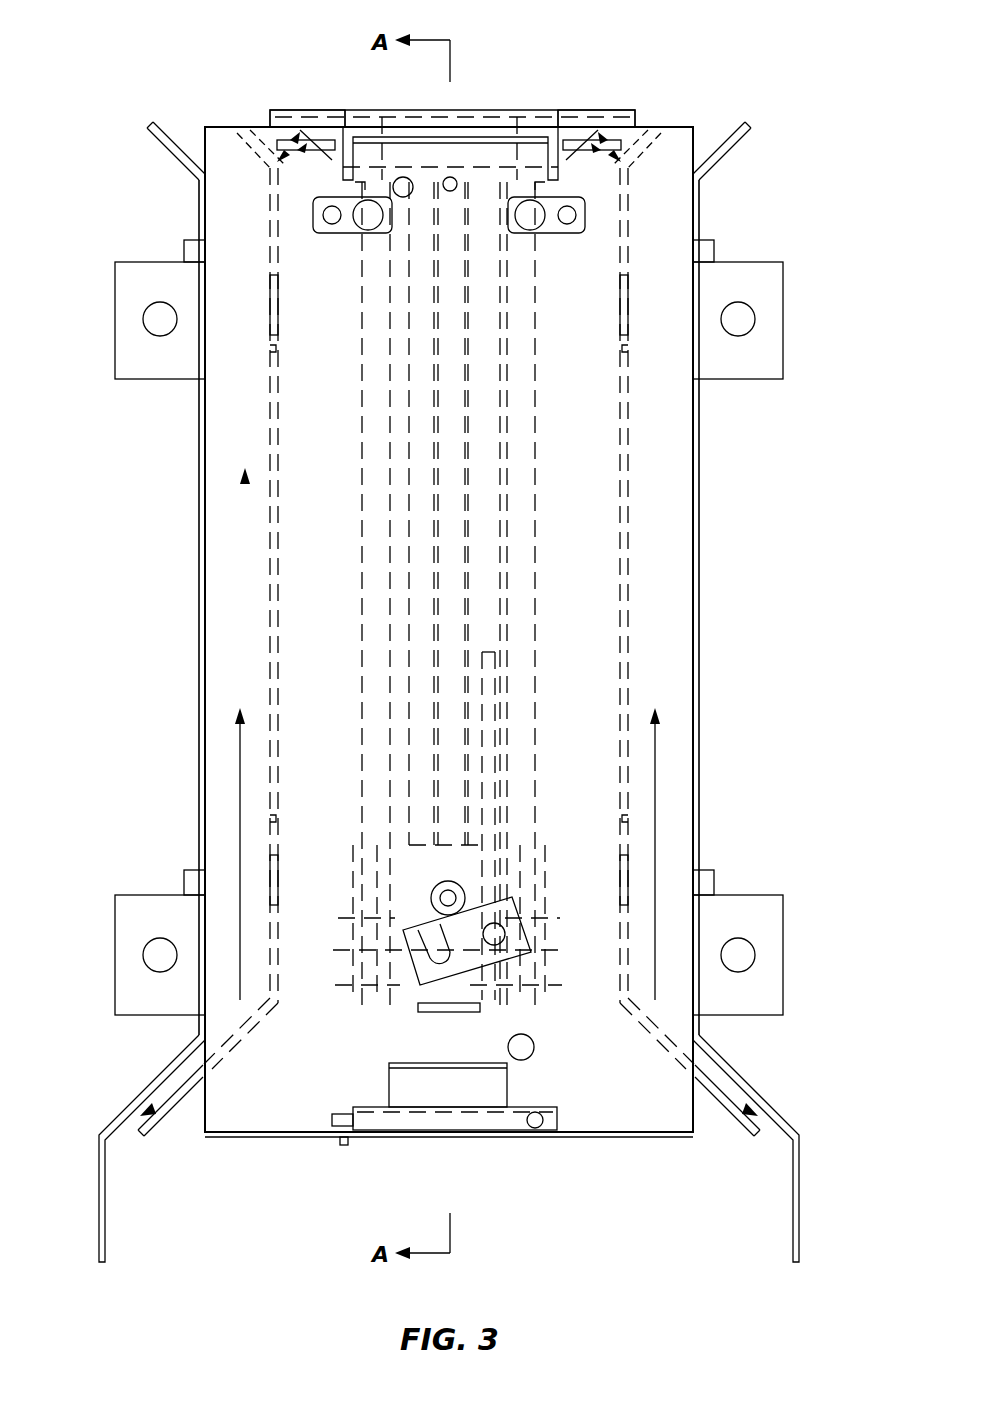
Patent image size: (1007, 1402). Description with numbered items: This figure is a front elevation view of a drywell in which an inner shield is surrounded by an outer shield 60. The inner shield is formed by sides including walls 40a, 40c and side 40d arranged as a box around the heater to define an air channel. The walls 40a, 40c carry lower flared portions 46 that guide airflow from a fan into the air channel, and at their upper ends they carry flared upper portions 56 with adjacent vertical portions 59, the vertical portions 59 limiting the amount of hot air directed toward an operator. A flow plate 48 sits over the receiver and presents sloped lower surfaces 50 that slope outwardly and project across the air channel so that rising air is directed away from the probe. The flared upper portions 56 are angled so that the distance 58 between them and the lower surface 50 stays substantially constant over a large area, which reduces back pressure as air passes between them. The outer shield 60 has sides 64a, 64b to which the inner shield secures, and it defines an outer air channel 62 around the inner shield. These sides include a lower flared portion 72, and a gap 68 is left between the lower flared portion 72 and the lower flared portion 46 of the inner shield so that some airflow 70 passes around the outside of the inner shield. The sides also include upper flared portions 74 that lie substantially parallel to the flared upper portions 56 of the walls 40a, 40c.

The side of inner shield 40a is at (302, 1075).
The side of inner shield 40c is at (270, 610).
The side of inner shield 40d is at (628, 605).
The flared portion 46 is at (167, 1118).
The flow plate 48 is at (490, 95).
The sloped lower surface 50 is at (262, 152).
The flared upper portion 56 is at (258, 128).
The distance 58 is at (285, 162).
The vertical portion 59 is at (278, 135).
The outer shield 60 is at (170, 450).
The outer air channel 62 is at (245, 470).
The side of outer shield 64a is at (199, 495).
The side of outer shield 64b is at (699, 476).
The gap 68 is at (147, 1110).
The airflow 70 is at (240, 806).
The lower flared portion 72 is at (152, 1077).
The upper flared portion 74 is at (162, 152).